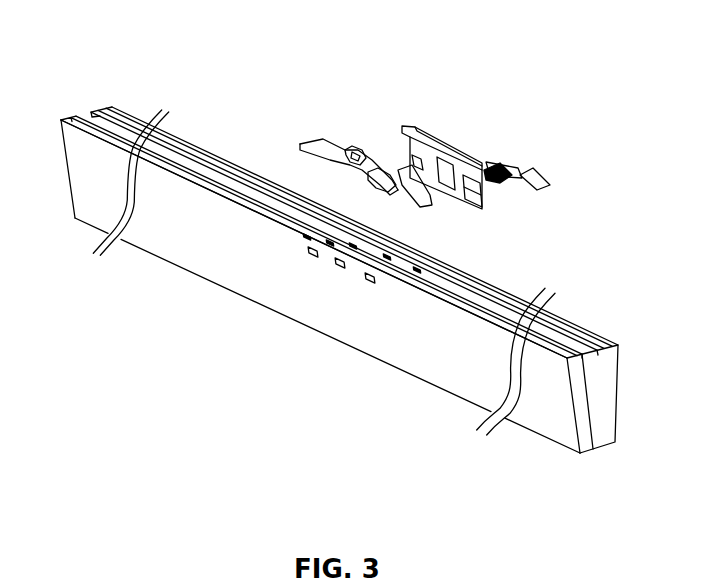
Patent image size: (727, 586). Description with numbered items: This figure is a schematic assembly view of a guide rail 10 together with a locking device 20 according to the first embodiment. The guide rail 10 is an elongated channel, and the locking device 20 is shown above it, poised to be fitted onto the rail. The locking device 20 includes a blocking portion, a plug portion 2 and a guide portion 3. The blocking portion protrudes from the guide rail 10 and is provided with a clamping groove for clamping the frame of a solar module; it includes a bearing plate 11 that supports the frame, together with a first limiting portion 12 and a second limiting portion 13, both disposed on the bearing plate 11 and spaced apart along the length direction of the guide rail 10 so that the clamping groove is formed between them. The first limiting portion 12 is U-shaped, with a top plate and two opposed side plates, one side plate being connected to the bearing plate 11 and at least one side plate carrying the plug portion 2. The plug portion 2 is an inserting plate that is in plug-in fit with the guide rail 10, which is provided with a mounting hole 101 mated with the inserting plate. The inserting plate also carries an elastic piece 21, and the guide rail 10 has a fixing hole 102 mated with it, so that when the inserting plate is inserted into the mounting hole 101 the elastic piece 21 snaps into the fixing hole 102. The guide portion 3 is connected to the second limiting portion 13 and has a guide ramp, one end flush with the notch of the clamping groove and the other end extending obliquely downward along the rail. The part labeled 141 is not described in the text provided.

The plug portion 2 is at (480, 205).
The guide portion 3 is at (548, 180).
The guide rail 10 is at (468, 362).
The bearing plate 11 is at (518, 167).
The first limiting portion 12 is at (478, 155).
The second limiting portion 13 is at (327, 140).
The locking device 20 is at (303, 142).
The elastic piece 21 is at (490, 193).
The mounting hole 101 is at (310, 240).
The fixing hole 102 is at (368, 283).
The flange 141 is at (453, 143).